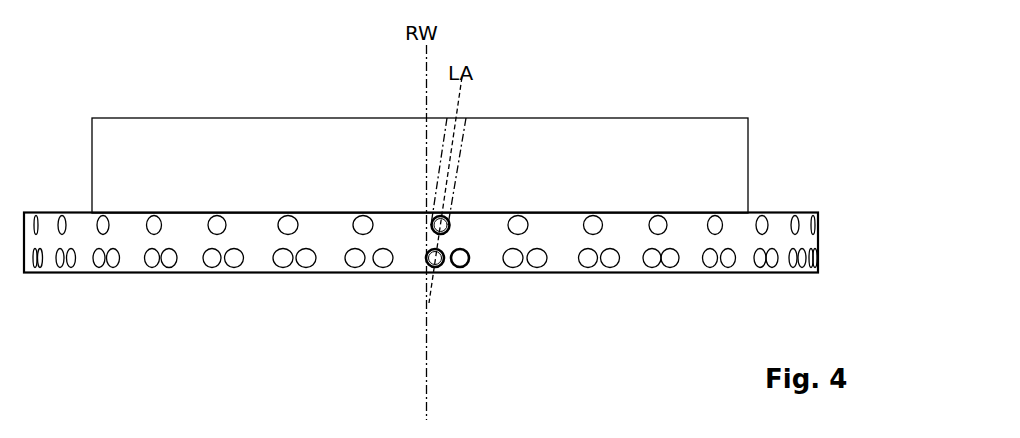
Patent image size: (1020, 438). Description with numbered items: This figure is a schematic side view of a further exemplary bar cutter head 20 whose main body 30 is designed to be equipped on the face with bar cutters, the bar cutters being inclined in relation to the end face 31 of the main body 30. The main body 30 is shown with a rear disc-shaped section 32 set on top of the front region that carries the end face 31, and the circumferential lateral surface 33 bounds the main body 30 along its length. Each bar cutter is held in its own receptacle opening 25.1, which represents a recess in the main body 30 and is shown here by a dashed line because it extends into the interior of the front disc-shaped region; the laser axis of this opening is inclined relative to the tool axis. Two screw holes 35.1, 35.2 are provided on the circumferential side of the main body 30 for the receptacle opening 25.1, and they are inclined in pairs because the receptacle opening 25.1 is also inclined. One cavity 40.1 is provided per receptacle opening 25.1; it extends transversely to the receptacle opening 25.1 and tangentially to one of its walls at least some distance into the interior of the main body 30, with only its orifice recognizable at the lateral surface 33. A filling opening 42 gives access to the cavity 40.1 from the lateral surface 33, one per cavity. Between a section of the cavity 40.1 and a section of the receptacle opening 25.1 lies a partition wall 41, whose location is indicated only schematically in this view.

The bar cutter head 20 is at (153, 55).
The receptacle opening 25.1 is at (456, 212).
The main body 30 is at (442, 250).
The end face 31 is at (628, 273).
The rear disc-shaped section 32 is at (733, 153).
The lateral surface 33 is at (743, 262).
The screw hole 35.1 is at (438, 270).
The screw hole 35.2 is at (431, 222).
The cavity 40.1 is at (456, 234).
The partition wall 41 is at (446, 217).
The filling opening 42 is at (469, 263).